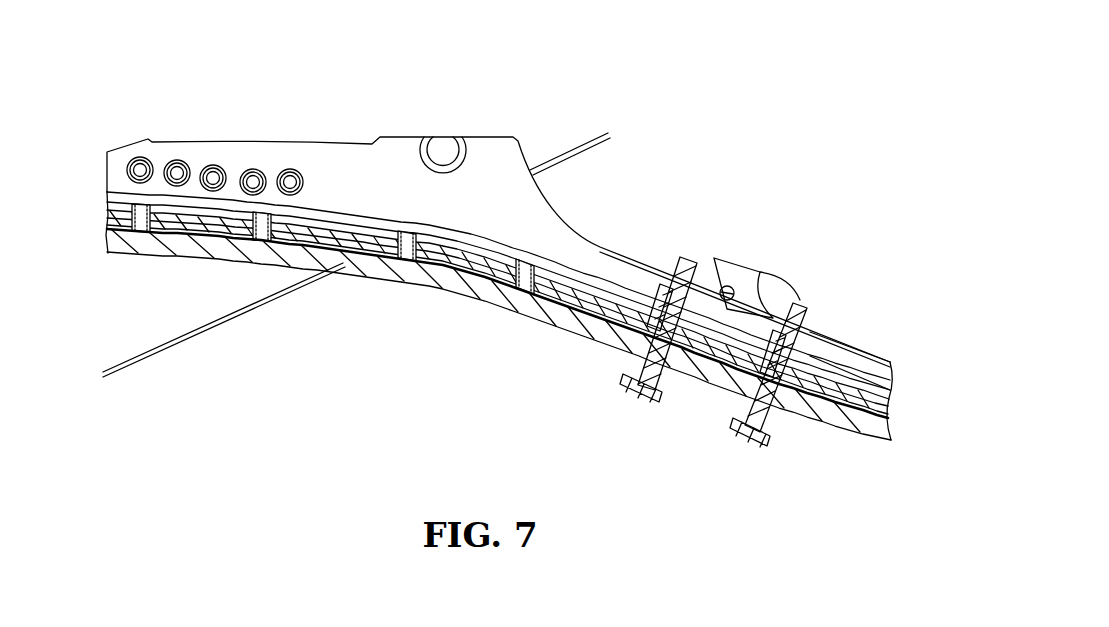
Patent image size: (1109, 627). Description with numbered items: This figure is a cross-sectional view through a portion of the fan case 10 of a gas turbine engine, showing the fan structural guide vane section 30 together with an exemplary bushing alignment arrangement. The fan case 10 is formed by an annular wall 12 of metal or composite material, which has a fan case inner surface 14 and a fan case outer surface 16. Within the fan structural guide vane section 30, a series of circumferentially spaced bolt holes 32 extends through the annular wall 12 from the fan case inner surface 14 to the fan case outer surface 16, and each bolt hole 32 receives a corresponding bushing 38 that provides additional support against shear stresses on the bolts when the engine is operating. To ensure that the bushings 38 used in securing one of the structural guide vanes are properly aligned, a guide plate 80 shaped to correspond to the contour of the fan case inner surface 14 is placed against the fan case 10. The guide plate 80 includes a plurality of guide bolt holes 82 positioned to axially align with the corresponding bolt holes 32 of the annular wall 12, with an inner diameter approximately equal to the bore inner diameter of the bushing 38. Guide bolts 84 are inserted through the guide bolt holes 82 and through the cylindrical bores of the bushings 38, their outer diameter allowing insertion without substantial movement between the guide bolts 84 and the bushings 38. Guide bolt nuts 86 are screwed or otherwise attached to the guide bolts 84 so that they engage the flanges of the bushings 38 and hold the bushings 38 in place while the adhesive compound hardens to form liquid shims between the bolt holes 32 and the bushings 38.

The fan case 10 is at (614, 90).
The fan structural guide vane section 30 is at (614, 90).
The bolt holes 32 is at (157, 215).
The bushing 38 is at (141, 220).
The guide plate 80 is at (600, 328).
The guide bolt holes 82 is at (641, 380).
The guide bolts 84 is at (648, 382).
The guide bolt nuts 86 is at (668, 278).
The annular wall 12 is at (885, 438).
The fan case inner surface 14 is at (853, 425).
The fan case outer surface 16 is at (868, 364).